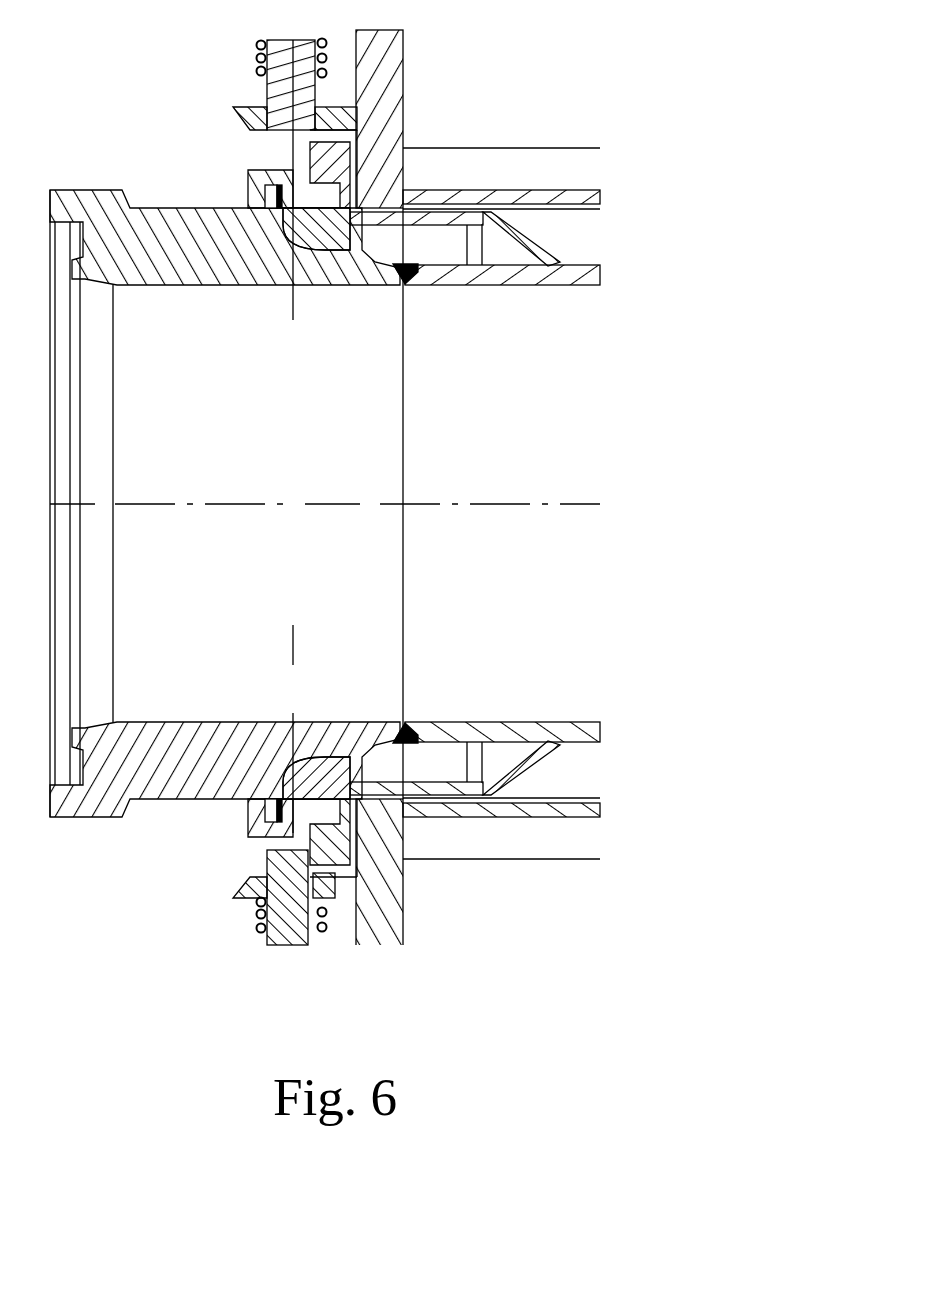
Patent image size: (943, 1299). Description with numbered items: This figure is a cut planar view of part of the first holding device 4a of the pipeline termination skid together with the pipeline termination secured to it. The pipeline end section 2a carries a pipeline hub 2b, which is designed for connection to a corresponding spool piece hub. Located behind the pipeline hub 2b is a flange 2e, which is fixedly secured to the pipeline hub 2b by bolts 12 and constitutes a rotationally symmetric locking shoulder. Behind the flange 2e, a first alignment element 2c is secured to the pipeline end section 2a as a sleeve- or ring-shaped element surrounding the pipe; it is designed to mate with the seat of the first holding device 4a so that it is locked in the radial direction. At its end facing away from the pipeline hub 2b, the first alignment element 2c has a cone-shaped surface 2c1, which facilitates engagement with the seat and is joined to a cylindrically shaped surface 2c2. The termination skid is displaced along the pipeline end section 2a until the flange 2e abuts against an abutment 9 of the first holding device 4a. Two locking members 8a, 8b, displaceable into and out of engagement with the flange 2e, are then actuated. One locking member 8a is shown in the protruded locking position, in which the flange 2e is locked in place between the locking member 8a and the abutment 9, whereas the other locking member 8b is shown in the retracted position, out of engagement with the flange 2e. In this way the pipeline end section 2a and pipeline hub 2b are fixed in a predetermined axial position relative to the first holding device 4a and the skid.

The pipeline end section 2a is at (572, 280).
The pipeline hub 2b is at (143, 220).
The first alignment element 2c is at (467, 224).
The cone-shaped surface 2c1 is at (533, 243).
The cylindrically shaped surface 2c2 is at (447, 207).
The flange 2e is at (345, 858).
The first holding device 4a is at (403, 78).
The locking member 8a is at (275, 868).
The locking member 8b is at (280, 97).
The abutment 9 is at (345, 875).
The bolts 12 is at (292, 192).